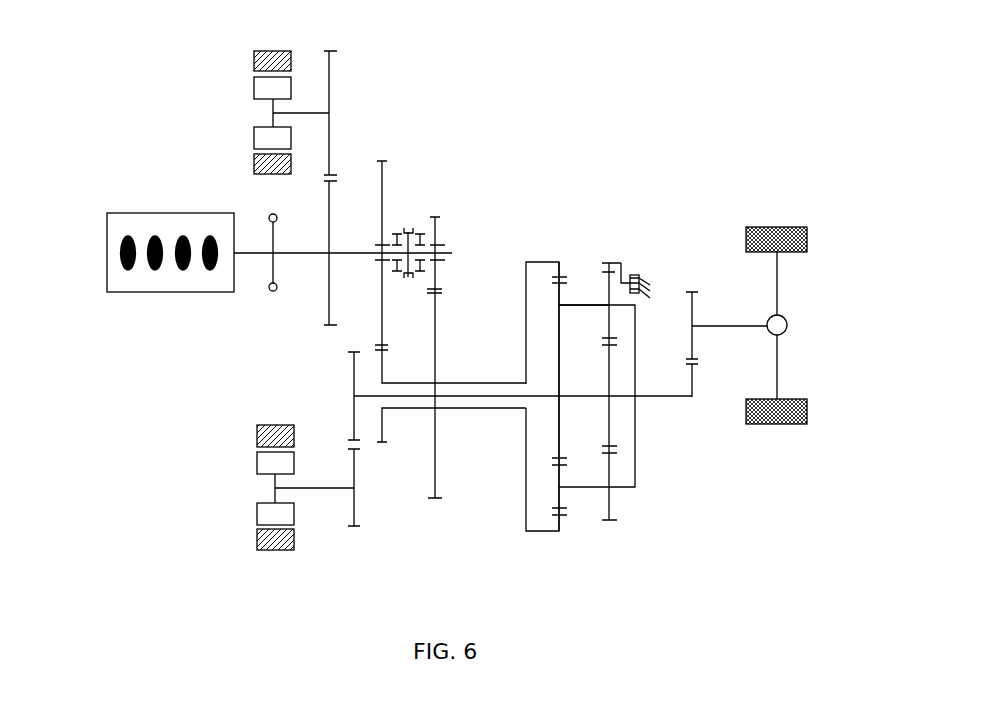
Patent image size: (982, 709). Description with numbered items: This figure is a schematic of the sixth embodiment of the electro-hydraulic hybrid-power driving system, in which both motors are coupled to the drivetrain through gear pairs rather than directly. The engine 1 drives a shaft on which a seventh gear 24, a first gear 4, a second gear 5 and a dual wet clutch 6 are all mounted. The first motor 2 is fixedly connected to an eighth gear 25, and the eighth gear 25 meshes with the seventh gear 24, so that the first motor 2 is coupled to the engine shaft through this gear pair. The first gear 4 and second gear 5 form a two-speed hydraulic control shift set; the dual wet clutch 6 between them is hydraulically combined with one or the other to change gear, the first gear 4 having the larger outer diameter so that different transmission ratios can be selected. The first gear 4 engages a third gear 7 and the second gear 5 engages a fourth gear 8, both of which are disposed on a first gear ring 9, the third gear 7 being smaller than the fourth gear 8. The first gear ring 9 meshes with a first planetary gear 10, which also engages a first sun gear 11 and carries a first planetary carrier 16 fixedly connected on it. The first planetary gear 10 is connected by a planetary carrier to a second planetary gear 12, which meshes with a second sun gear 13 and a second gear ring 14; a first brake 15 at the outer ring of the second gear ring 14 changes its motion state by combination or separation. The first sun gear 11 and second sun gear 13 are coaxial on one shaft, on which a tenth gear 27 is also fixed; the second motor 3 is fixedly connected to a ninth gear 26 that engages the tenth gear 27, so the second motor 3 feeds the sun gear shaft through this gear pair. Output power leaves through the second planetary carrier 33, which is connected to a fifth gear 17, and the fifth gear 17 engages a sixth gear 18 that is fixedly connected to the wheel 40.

The engine 1 is at (107, 292).
The first motor 2 is at (255, 57).
The second motor 3 is at (256, 528).
The first gear 4 is at (382, 200).
The second gear 5 is at (436, 232).
The dual wet clutch 6 is at (407, 228).
The third gear 7 is at (383, 365).
The fourth gear 8 is at (437, 365).
The first gear ring 9 is at (544, 261).
The first planetary gear 10 is at (560, 295).
The first sun gear 11 is at (560, 375).
The second planetary gear 12 is at (609, 318).
The second sun gear 13 is at (609, 414).
The second gear ring 14 is at (618, 264).
The first brake 15 is at (642, 283).
The first planetary carrier 16 is at (573, 305).
The fifth gear 17 is at (693, 387).
The sixth gear 18 is at (693, 312).
The seventh gear 24 is at (331, 228).
The eighth gear 25 is at (331, 122).
The ninth gear 26 is at (355, 482).
The tenth gear 27 is at (354, 371).
The second planetary carrier 33 is at (636, 328).
The wheel 40 is at (807, 223).